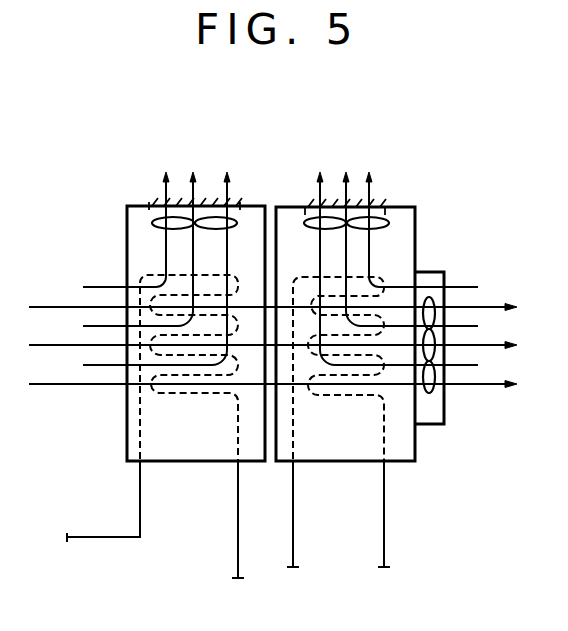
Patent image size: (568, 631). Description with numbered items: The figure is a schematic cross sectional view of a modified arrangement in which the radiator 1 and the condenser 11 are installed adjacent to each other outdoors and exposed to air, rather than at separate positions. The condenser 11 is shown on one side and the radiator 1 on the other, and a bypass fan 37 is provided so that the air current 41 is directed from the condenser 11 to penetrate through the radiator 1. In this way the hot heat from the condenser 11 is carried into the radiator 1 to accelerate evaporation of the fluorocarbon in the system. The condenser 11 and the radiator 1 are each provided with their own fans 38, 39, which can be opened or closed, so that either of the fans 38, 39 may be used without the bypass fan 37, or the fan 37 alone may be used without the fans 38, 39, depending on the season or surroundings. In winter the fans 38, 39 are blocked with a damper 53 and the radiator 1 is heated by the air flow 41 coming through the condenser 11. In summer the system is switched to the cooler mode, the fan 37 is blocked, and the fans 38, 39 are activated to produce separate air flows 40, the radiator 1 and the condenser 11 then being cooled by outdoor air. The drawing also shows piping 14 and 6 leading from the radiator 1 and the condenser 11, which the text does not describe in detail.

The radiator 1 is at (331, 461).
The refrigerant pipe 6 is at (385, 525).
The condenser 11 is at (191, 461).
The refrigerant pipe 14 is at (238, 558).
The fan 37 is at (433, 393).
The fan 38 is at (390, 224).
The fan 39 is at (152, 227).
The air flows 40 is at (228, 190).
The air current 41 is at (481, 385).
The damper 53 is at (150, 205).